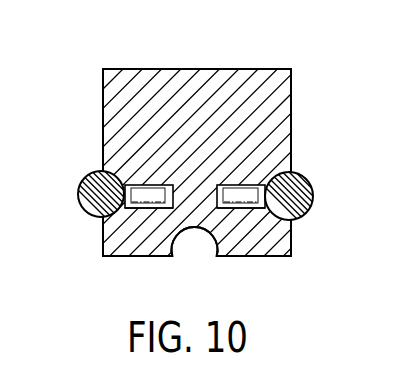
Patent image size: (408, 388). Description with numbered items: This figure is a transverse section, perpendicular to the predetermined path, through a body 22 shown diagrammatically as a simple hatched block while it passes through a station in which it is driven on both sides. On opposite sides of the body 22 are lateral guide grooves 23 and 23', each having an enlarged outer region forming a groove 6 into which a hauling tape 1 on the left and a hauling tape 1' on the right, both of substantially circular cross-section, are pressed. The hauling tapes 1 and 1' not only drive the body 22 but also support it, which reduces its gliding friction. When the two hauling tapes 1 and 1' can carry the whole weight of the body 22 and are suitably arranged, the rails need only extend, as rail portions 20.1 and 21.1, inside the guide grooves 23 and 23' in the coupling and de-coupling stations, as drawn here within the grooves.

The body 22 is at (172, 93).
The left rail extension inside guide groove 20.1 is at (148, 195).
The right rail extension inside guide groove 21.1 is at (248, 193).
The guide groove 23 is at (149, 253).
The guide groove 23' is at (239, 253).
The groove 6 is at (178, 232).
The hauling tape 1 is at (110, 190).
The hauling tape 1' is at (300, 190).